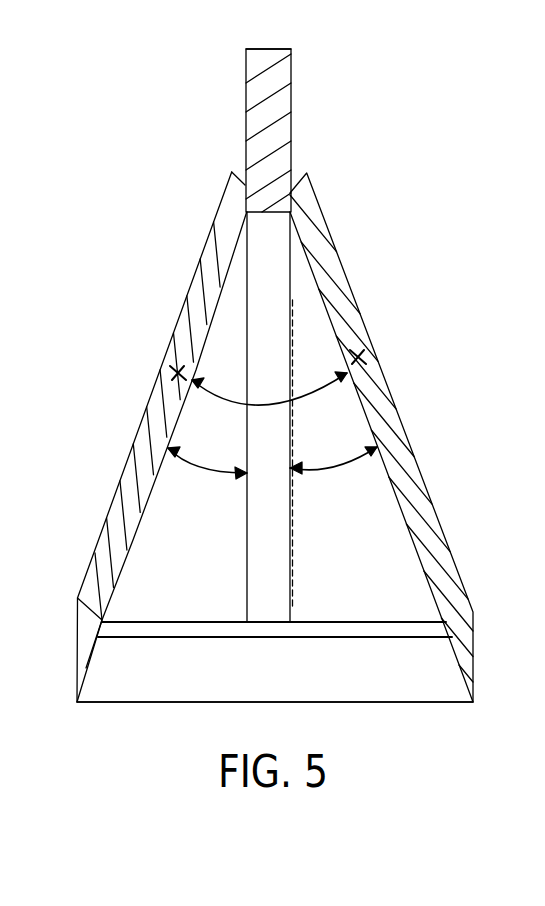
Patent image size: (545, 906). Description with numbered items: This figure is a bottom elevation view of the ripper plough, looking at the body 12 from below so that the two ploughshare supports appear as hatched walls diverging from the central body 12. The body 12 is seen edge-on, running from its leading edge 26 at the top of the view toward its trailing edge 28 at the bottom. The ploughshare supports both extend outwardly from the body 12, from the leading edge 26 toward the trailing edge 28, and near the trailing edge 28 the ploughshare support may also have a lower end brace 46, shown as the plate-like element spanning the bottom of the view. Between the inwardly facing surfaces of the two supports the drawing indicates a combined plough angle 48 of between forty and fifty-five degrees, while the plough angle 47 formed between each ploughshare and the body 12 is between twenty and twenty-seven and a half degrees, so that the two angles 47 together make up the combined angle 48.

The body 12 is at (290, 104).
The leading edge 26 is at (267, 49).
The trailing edge 28 is at (270, 625).
The lower end brace 46 is at (205, 637).
The plough angle 47 is at (333, 467).
The combined plough angle 48 is at (263, 405).